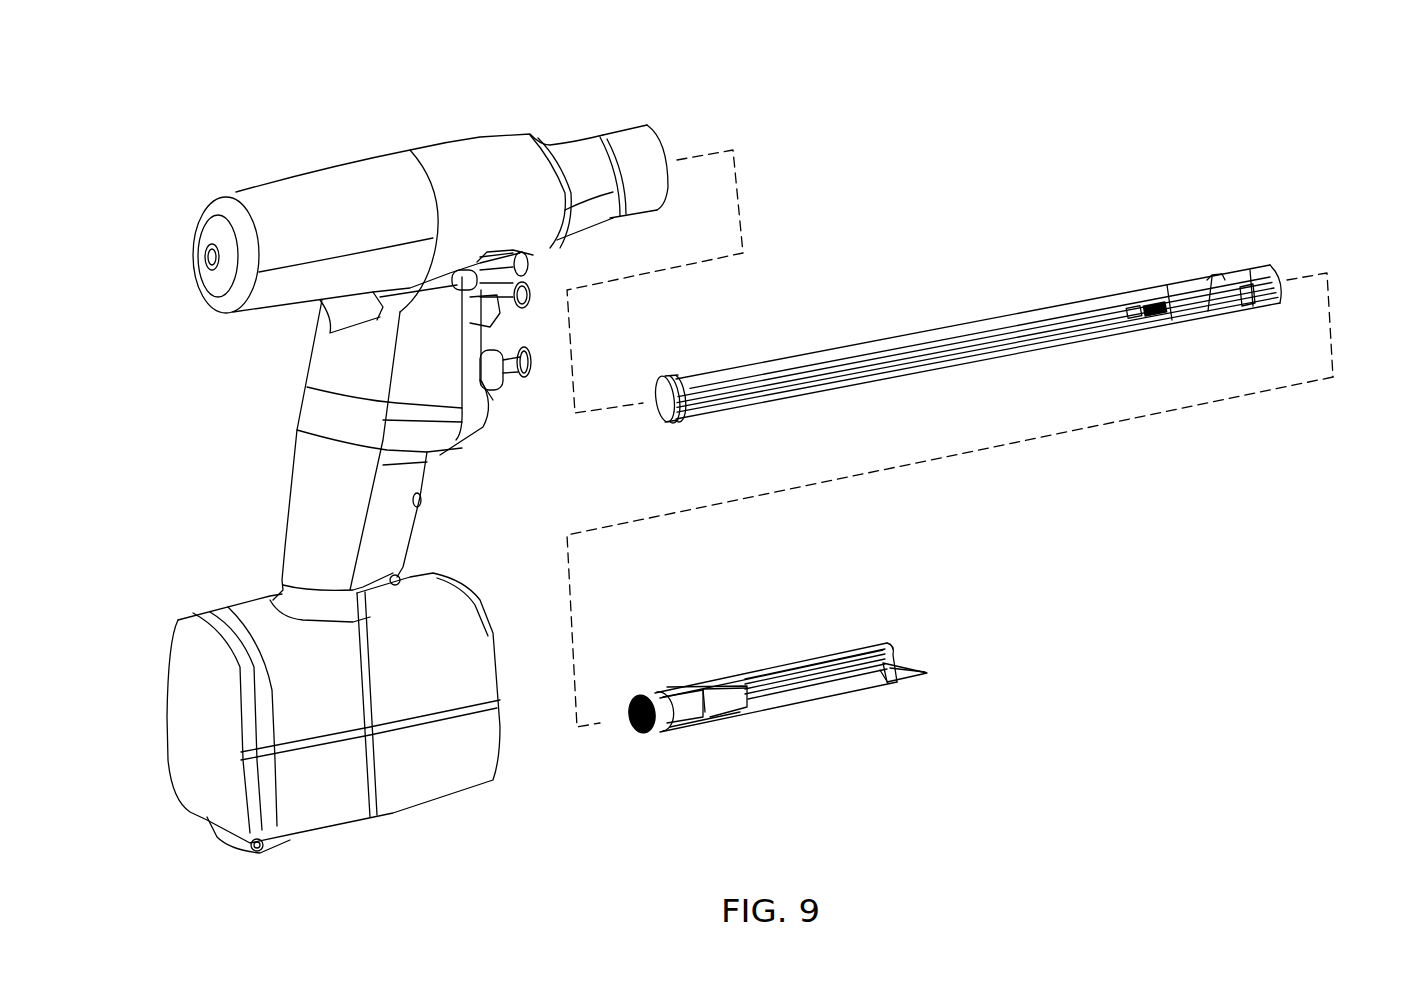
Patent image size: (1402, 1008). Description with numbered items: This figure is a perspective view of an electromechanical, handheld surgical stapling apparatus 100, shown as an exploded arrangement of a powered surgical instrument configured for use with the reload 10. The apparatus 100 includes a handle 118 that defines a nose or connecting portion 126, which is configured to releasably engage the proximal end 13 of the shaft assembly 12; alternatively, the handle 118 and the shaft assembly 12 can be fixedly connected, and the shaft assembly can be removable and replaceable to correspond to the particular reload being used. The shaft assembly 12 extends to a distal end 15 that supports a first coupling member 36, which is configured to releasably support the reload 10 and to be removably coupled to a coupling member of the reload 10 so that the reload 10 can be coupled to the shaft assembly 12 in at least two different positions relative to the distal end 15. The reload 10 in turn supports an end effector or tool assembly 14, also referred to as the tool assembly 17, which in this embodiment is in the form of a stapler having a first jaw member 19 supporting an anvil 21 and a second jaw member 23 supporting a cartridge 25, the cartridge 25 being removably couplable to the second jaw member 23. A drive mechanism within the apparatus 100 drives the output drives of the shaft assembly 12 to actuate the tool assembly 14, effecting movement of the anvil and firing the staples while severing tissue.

The electromechanical handheld surgical stapling apparatus 100 is at (464, 78).
The handle 118 is at (236, 190).
The nose or connecting portion 126 is at (580, 147).
The reload 10 is at (919, 193).
The shaft assembly 12 is at (948, 318).
The proximal end of the shaft assembly 13 is at (673, 377).
The distal end of the shaft assembly 15 is at (1211, 276).
The first coupling member 36 is at (1237, 262).
The tool assembly 14 is at (794, 652).
The tool assembly 17 is at (779, 738).
The first jaw member 19 is at (877, 644).
The anvil 21 is at (887, 664).
The cartridge 25 is at (893, 673).
The second jaw member 23 is at (867, 686).